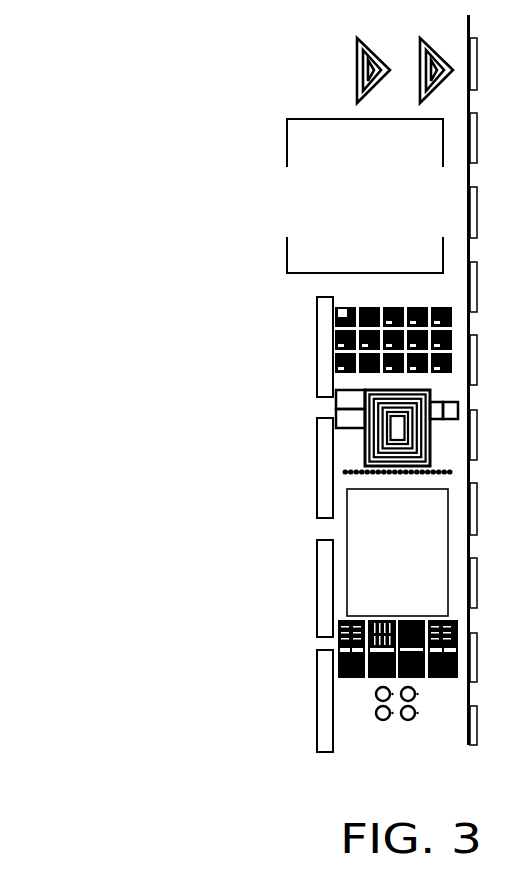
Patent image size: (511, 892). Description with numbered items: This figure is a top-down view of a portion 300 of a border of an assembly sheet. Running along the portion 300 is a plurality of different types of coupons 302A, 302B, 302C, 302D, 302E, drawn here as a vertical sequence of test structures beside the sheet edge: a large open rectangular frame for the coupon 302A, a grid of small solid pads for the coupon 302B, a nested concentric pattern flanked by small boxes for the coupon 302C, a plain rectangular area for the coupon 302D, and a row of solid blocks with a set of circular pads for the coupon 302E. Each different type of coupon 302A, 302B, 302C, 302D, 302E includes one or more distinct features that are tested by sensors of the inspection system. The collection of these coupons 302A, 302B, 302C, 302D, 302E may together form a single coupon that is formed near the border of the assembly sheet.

The portion of a border 300 is at (98, 62).
The coupon 302A is at (283, 175).
The coupon 302B is at (317, 336).
The coupon 302C is at (317, 432).
The coupon 302D is at (317, 558).
The coupon 302E is at (313, 644).